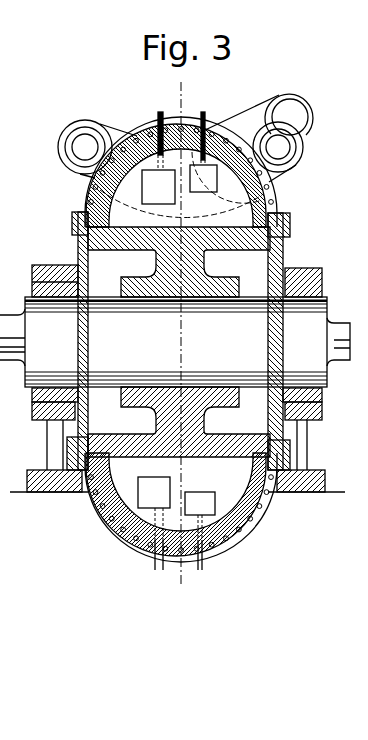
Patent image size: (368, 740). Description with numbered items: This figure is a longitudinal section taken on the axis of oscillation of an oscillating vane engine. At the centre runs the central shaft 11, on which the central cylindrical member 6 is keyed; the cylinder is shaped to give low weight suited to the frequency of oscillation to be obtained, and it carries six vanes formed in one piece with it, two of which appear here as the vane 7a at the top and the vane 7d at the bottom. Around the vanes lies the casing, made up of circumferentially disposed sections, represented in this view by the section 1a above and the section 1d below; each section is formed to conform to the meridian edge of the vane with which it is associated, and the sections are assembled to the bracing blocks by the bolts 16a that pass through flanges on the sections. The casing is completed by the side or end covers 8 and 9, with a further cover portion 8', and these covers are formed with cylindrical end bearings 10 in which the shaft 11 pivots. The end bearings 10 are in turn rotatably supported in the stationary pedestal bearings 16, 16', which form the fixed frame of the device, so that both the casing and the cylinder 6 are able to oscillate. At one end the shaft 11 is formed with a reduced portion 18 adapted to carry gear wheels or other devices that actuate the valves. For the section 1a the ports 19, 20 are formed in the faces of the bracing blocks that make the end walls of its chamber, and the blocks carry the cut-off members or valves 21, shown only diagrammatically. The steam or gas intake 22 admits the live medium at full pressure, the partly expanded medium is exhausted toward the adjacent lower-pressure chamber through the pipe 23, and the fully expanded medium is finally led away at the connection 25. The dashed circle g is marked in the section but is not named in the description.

The casing section 1a is at (232, 165).
The casing section 1d is at (168, 553).
The central cylindrical member 6 is at (238, 239).
The vane 7a is at (181, 172).
The vane 7d is at (181, 507).
The side cover 8 is at (63, 341).
The side cover 8' is at (69, 478).
The side cover 9 is at (287, 221).
The cylindrical end bearing 10 is at (297, 269).
The central shaft 11 is at (176, 342).
The pedestal bearing 16 is at (309, 447).
The pedestal bearing 16' is at (44, 447).
The bolts 16a is at (129, 146).
The reduced portion 18 is at (338, 326).
The port 19 is at (203, 178).
The port 20 is at (158, 187).
The cut-off member or valve 21 is at (182, 132).
The steam or gas intake 22 is at (286, 152).
The exhaust pipe 23 is at (75, 148).
The exhaust connection 25 is at (292, 108).
The pitch circle g is at (181, 317).